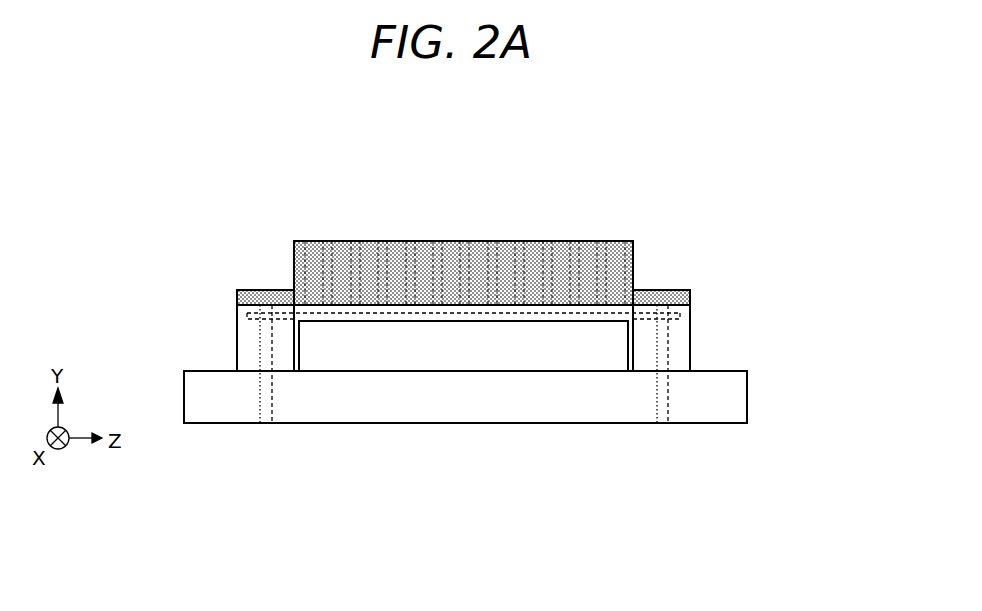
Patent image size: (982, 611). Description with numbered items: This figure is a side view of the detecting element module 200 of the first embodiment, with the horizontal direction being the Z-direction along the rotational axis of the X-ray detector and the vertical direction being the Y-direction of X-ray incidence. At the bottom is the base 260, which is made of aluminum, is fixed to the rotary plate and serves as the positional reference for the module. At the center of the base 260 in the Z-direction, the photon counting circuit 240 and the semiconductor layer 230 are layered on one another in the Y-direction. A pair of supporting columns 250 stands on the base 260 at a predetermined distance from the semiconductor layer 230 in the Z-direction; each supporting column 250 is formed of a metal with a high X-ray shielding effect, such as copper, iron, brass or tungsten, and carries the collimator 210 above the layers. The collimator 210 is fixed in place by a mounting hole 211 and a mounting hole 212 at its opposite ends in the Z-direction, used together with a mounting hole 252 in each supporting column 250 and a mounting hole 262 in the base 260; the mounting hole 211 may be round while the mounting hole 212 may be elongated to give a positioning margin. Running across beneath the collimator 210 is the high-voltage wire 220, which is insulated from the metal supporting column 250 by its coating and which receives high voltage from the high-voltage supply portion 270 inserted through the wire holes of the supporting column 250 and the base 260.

The detecting element module 200 is at (784, 167).
The collimator 210 is at (640, 288).
The mounting hole 211 is at (666, 290).
The mounting hole 212 is at (265, 290).
The high-voltage wire 220 is at (683, 316).
The semiconductor layer 230 is at (465, 430).
The photon counting circuit 240 is at (457, 371).
The supporting column 250 is at (236, 322).
The mounting hole 252 is at (494, 397).
The base 260 is at (216, 371).
The mounting hole 262 is at (494, 397).
The high-voltage supply portion 270 is at (263, 423).